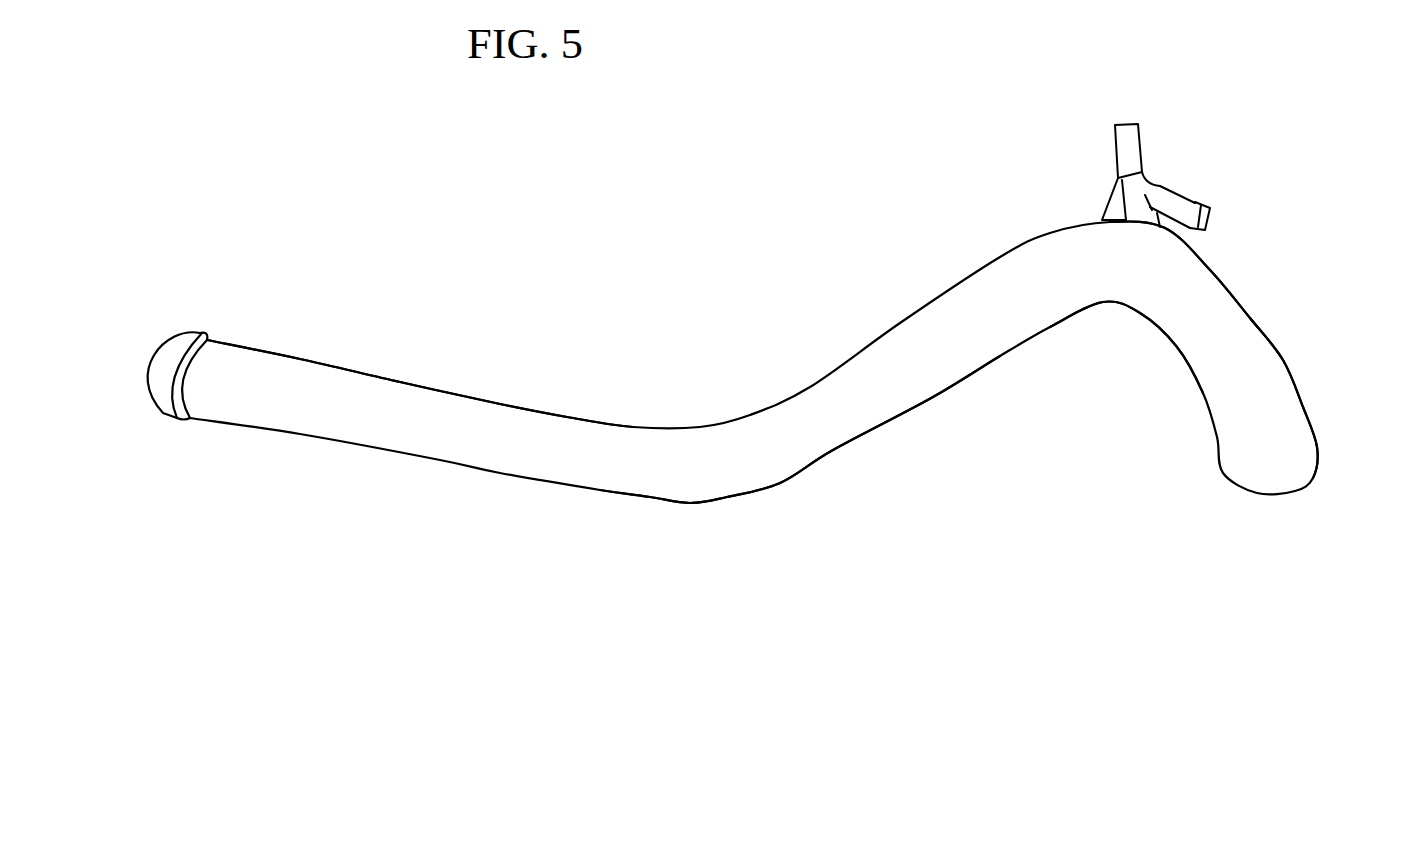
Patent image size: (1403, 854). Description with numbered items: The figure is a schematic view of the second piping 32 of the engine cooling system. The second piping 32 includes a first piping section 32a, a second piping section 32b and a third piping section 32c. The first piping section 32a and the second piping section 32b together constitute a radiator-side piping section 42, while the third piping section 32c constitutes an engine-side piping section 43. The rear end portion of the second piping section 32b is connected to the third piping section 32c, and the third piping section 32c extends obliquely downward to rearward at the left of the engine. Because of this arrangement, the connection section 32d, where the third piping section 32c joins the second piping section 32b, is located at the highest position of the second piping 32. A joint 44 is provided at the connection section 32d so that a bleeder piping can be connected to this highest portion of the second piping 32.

The second piping 32 is at (738, 350).
The first piping section 32a is at (445, 390).
The second piping section 32b is at (887, 428).
The third piping section 32c is at (1297, 377).
The connection section 32d is at (1105, 302).
The radiator-side piping section 42 is at (705, 530).
The engine-side piping section 43 is at (1240, 300).
The joint 44 is at (1165, 187).